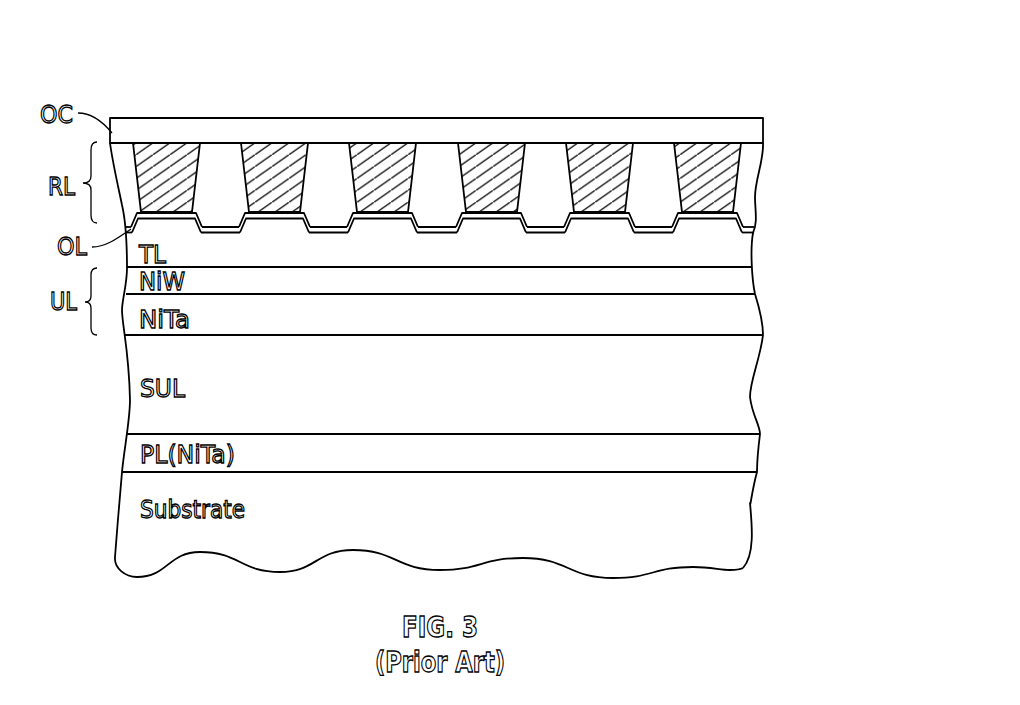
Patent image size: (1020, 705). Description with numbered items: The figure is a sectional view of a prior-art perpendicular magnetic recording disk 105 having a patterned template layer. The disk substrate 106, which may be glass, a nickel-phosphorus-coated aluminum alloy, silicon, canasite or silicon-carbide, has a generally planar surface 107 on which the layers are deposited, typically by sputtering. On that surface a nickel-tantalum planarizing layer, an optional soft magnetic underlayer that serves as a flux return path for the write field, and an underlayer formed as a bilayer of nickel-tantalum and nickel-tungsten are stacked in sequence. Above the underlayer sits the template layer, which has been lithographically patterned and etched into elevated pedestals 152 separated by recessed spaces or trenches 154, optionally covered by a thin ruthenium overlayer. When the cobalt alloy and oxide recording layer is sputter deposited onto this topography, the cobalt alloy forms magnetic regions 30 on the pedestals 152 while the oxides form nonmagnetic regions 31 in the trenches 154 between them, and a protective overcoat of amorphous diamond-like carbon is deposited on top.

The PMR disk 105 is at (126, 43).
The magnetic regions 30 is at (166, 152).
The nonmagnetic regions 31 is at (221, 153).
The pedestals 152 is at (274, 219).
The trenches 154 is at (220, 233).
The surface 107 is at (747, 457).
The disk substrate 106 is at (733, 527).